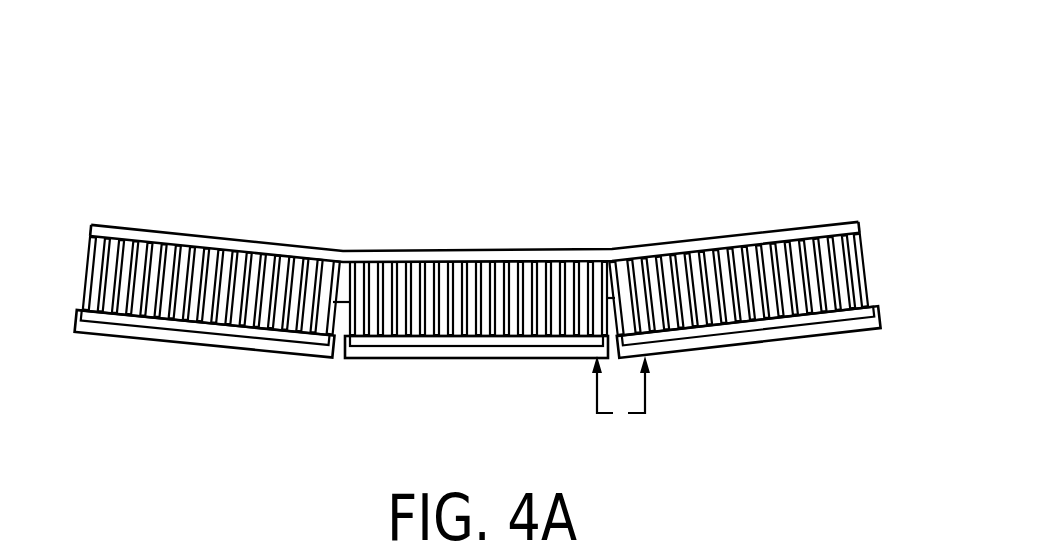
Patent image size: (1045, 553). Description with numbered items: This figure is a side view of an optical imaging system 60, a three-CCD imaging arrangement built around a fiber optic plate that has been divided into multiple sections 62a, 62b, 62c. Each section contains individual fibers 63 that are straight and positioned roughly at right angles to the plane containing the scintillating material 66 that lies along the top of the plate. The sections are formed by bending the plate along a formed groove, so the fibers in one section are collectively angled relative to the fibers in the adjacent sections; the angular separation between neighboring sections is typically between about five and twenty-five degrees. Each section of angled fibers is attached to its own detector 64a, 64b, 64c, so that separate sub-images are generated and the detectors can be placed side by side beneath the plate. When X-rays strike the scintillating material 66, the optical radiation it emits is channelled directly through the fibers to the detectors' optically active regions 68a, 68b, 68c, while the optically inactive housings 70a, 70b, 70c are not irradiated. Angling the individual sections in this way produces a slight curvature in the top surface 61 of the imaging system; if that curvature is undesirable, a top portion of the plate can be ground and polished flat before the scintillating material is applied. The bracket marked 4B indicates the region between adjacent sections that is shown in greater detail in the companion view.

The optical imaging system 60 is at (647, 100).
The top surface 61 is at (752, 214).
The section 62a is at (102, 177).
The section 62b is at (352, 200).
The section 62c is at (605, 198).
The individual fibers 63 is at (92, 252).
The scintillating material 66 is at (856, 221).
The detector 64a is at (197, 355).
The detector 64b is at (477, 367).
The detector 64c is at (752, 350).
The optically active region 68a is at (238, 332).
The optically active region 68b is at (535, 340).
The optically active region 68c is at (870, 302).
The optically inactive housing 70a is at (283, 352).
The optically inactive housing 70b is at (422, 352).
The optically inactive housing 70c is at (852, 318).
The section indicator for FIG. 4B is at (621, 409).